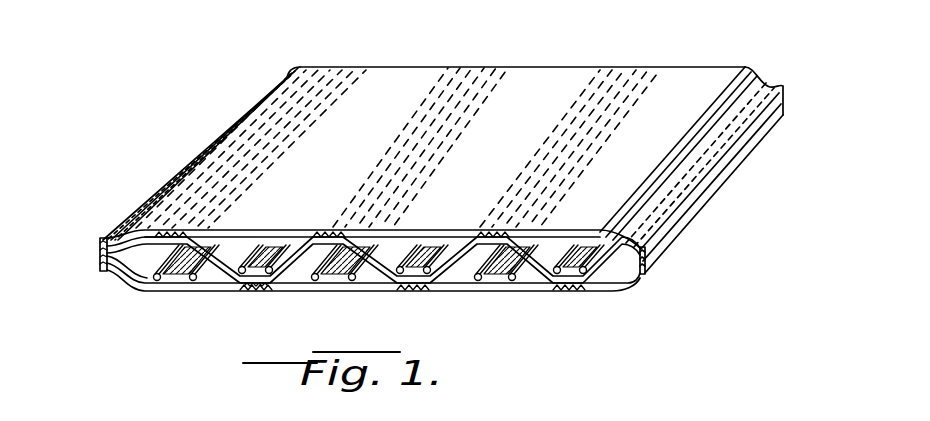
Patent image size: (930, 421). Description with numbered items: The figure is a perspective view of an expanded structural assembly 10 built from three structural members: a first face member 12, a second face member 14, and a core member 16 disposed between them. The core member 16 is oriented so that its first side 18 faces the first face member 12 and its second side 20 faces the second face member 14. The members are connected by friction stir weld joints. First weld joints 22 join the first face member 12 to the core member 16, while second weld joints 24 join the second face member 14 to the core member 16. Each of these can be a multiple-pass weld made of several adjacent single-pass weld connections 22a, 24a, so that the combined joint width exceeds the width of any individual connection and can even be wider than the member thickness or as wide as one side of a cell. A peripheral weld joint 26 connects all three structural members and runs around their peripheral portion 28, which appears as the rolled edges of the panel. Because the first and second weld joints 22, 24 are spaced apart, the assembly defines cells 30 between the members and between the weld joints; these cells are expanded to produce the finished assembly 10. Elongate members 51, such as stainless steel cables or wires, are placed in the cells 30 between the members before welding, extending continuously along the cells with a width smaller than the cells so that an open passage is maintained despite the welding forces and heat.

The structural assembly 10 is at (266, 52).
The first face member 12 is at (106, 237).
The second face member 14 is at (106, 272).
The core member 16 is at (100, 253).
The first side of the core member 18 is at (224, 243).
The second side of the core member 20 is at (142, 258).
The first weld joints 22 is at (321, 84).
The single-pass weld connections 22a is at (448, 110).
The second weld joints 24 is at (276, 295).
The single-pass weld connections 24a is at (257, 288).
The peripheral weld joint 26 is at (172, 172).
The peripheral portion 28 is at (783, 82).
The cells 30 is at (337, 275).
The elongate members 51 is at (192, 270).